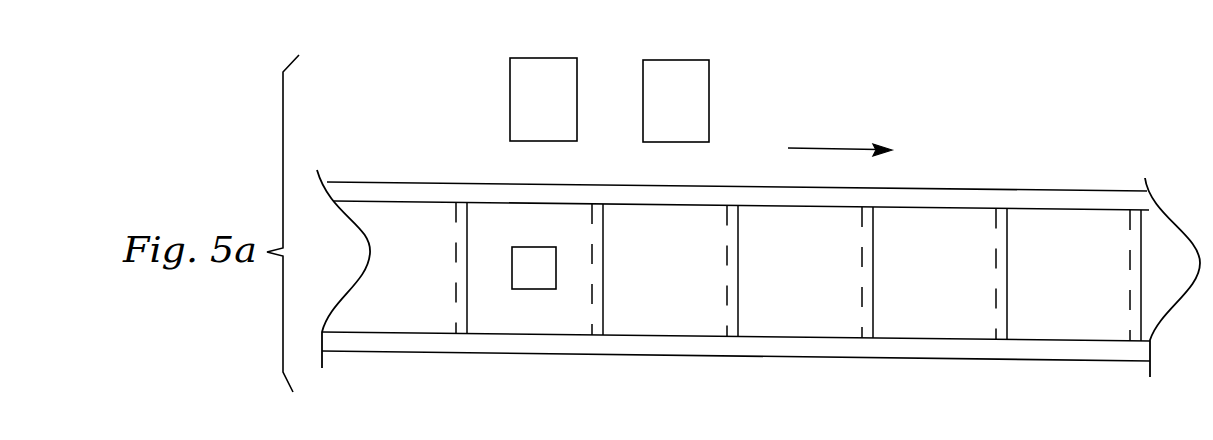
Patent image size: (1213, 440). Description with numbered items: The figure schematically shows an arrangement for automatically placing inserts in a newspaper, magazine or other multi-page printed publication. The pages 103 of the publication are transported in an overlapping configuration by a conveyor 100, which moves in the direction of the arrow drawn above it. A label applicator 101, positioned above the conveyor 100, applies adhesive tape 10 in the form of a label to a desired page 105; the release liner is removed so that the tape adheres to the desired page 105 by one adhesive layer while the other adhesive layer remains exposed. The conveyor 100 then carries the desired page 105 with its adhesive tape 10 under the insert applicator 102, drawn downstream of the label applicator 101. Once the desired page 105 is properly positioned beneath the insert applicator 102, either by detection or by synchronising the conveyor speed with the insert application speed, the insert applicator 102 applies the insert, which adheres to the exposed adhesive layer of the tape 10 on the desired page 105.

The conveyor 100 is at (1059, 197).
The label applicator 101 is at (525, 85).
The insert applicator 102 is at (700, 88).
The pages 103 is at (398, 320).
The desired page 105 is at (489, 327).
The adhesive tape 10 is at (538, 287).